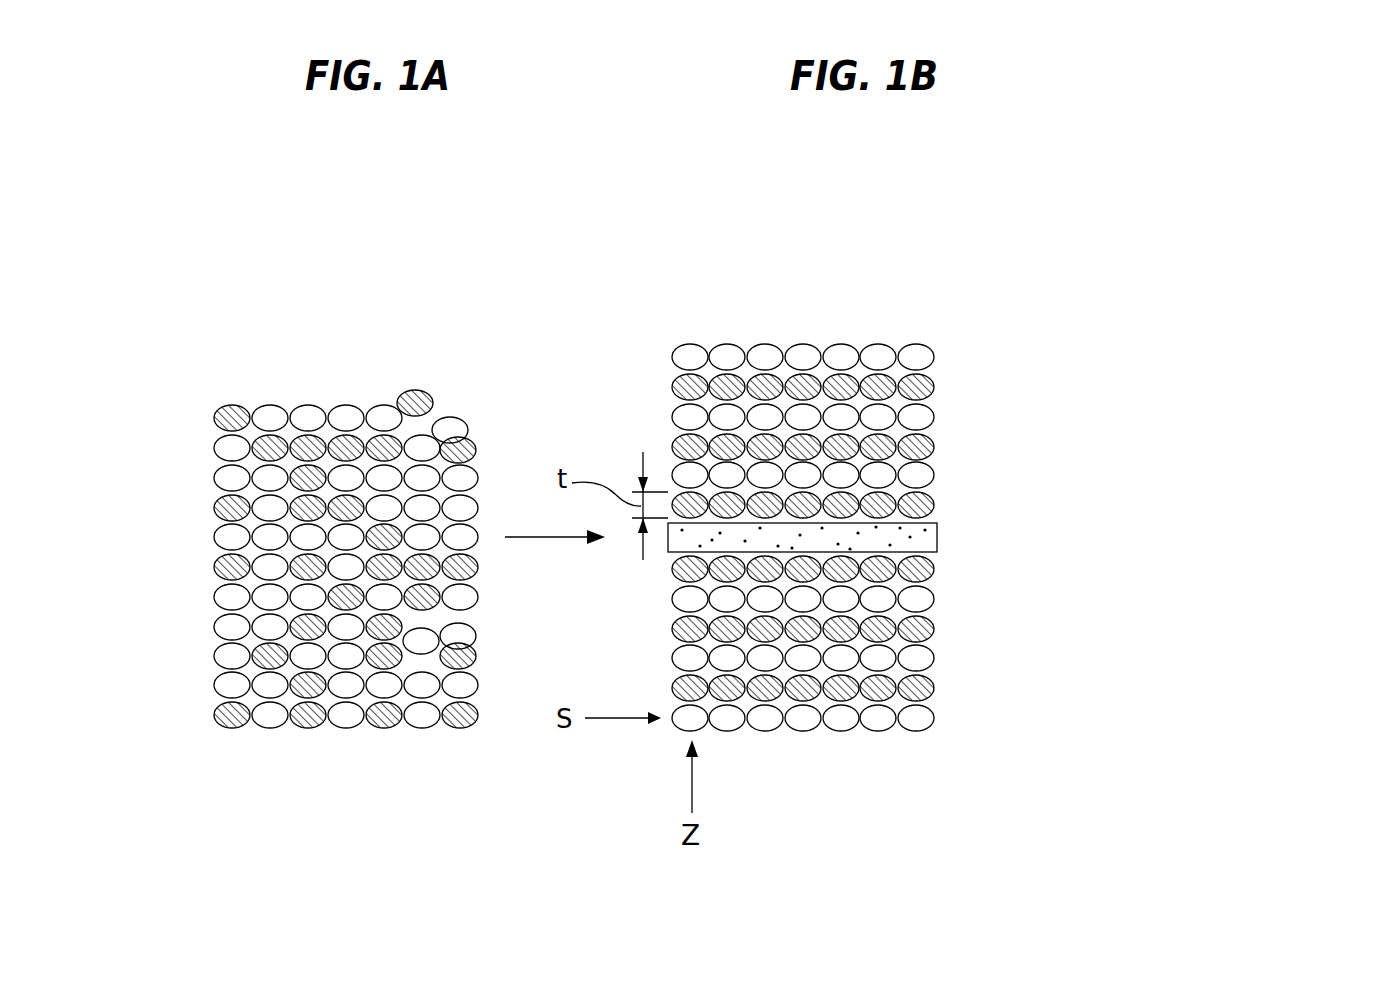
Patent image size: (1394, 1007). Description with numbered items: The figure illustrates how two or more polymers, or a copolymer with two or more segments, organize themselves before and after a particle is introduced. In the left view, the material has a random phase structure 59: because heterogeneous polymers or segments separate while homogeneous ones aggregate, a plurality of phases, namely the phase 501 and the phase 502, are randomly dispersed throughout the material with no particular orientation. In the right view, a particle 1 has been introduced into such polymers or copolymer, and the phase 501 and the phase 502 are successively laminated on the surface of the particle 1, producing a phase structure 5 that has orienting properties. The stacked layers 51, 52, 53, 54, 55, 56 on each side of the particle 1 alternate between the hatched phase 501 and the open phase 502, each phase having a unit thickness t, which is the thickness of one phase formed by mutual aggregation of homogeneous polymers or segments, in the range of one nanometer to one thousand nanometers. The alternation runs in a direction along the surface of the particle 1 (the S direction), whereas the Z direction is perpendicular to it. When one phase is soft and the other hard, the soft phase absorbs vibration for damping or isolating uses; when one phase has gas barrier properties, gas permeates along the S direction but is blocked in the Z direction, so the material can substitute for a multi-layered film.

In FIG. 1A, the random phase structure 59 is at (344, 358).
In FIG. 1A, the phase 501 is at (222, 566).
In FIG. 1B, the phase 501 is at (850, 780).
In FIG. 1A, the phase 502 is at (450, 428).
In FIG. 1B, the phase 502 is at (878, 356).
In FIG. 1B, the phase structure 5 is at (1021, 535).
In FIG. 1B, the phase layer 51 is at (918, 505).
In FIG. 1B, the phase layer 52 is at (918, 475).
In FIG. 1B, the phase layer 53 is at (918, 447).
In FIG. 1B, the phase layer 54 is at (918, 417).
In FIG. 1B, the phase layer 55 is at (918, 387).
In FIG. 1B, the phase layer 56 is at (918, 357).
In FIG. 1B, the particle 1 is at (937, 537).